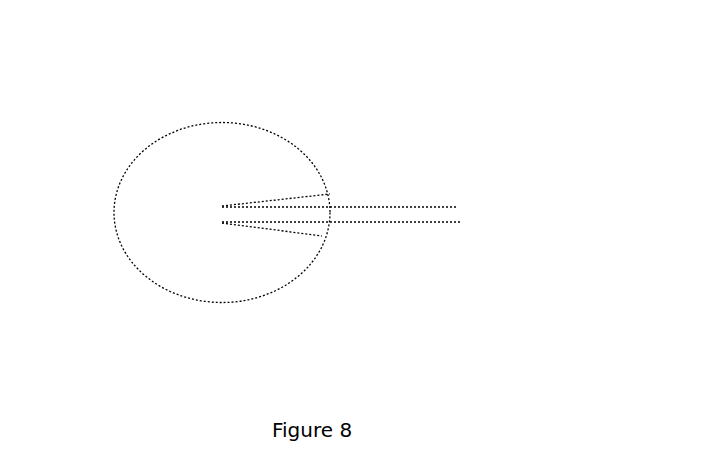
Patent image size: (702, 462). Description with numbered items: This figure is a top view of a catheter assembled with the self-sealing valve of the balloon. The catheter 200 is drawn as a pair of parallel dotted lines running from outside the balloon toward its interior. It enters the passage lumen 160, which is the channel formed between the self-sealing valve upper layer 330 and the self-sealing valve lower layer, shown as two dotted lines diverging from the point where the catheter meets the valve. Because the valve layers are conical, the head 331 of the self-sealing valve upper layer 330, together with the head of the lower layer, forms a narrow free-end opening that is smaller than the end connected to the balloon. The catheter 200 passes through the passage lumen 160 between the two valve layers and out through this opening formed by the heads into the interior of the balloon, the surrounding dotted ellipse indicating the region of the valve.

The catheter 200 is at (440, 193).
The passage lumen 160 is at (327, 196).
The self-sealing valve upper layer 330 is at (300, 237).
The head 331 is at (218, 210).